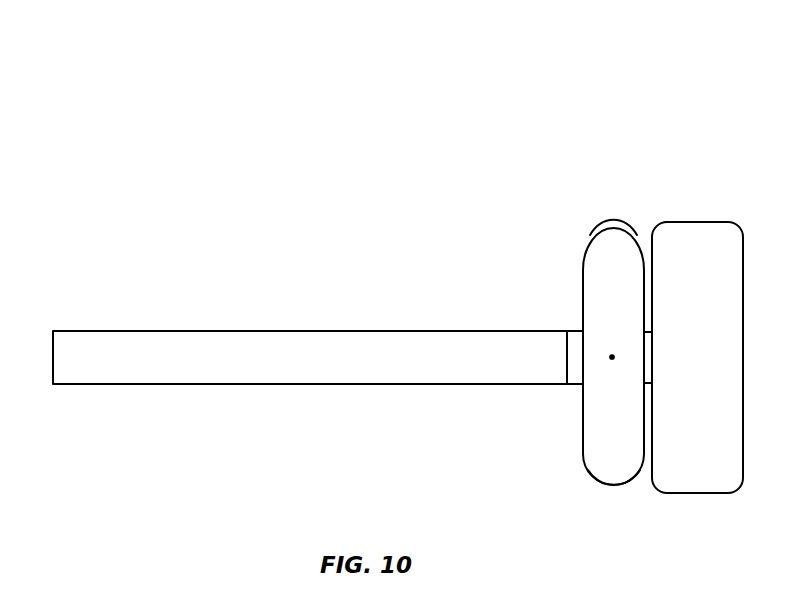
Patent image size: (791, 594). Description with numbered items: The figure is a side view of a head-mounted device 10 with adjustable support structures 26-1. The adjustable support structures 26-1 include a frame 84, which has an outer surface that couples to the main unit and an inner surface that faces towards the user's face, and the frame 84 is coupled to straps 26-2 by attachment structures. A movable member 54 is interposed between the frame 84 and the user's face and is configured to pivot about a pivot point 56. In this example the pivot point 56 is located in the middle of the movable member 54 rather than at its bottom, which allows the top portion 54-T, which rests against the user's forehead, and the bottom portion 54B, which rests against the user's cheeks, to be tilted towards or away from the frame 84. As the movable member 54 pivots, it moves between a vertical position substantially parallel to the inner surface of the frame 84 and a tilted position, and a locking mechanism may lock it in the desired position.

The device 10 is at (519, 110).
The adjustable support structures 26-1 is at (580, 480).
The straps 26-2 is at (297, 331).
The movable member 54 is at (583, 283).
The top portion of movable member 54-T is at (613, 227).
The bottom portion of movable member 54B is at (613, 486).
The pivot point 56 is at (612, 358).
The frame 84 is at (698, 222).